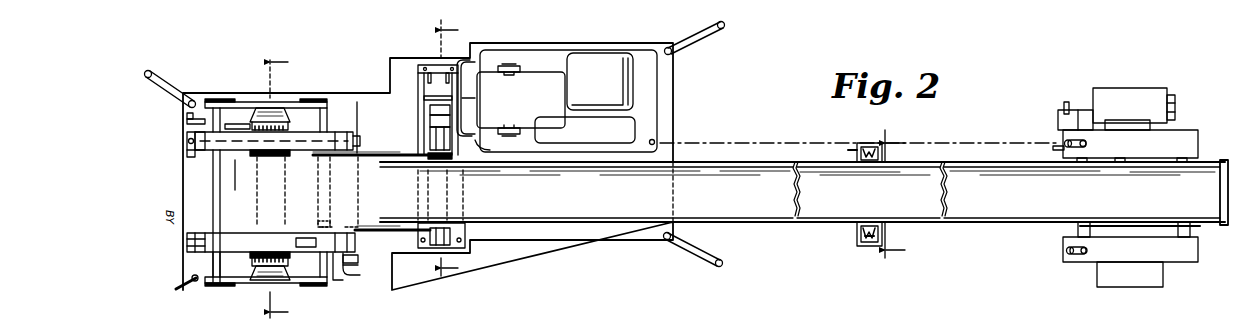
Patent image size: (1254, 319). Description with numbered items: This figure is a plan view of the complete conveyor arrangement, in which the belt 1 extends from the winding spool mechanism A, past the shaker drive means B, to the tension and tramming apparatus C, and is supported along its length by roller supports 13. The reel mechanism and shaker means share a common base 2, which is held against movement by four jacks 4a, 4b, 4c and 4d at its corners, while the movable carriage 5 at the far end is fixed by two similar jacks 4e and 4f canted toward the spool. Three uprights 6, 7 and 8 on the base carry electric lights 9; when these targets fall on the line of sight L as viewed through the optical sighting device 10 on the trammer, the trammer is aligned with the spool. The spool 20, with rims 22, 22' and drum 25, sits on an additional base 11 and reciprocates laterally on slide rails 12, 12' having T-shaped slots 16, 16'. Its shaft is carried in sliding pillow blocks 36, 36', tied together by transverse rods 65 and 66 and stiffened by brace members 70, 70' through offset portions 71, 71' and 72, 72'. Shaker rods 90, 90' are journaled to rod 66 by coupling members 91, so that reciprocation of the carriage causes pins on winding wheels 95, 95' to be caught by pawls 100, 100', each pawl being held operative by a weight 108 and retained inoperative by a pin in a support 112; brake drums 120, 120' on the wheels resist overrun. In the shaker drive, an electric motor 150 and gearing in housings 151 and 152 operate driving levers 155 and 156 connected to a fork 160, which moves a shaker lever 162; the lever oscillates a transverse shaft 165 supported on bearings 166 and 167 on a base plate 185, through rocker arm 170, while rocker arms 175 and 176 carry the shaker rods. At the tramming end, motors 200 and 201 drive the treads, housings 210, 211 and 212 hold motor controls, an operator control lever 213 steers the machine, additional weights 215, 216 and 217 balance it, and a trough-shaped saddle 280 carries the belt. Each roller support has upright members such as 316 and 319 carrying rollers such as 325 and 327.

The belt 1 is at (772, 216).
The base 2 is at (372, 92).
The movable carriage 5 is at (1206, 242).
The upright 6 is at (186, 147).
The upright 7 is at (360, 142).
The upright 8 is at (656, 141).
The electric light 9 is at (188, 140).
The optical sighting device 10 is at (1056, 149).
The additional base 11 is at (440, 150).
The slide rail 12 is at (548, 196).
The roller supports 13 is at (856, 230).
The T-shaped slot 16 is at (205, 244).
The winding spool 20 is at (256, 186).
The peripheral rim 22 is at (294, 228).
The drum 25 is at (256, 208).
The sliding pillow block 36 is at (259, 262).
The transverse rod 65 is at (213, 185).
The transverse rod 66 is at (348, 282).
The brace member 70 is at (266, 294).
The offset portion 71 is at (226, 281).
The offset portion 72 is at (325, 284).
The shaker rod 90 is at (392, 239).
The coupling member 91 is at (332, 220).
The winding wheel 95 is at (271, 242).
The pawl 100 is at (308, 244).
The weight 108 is at (358, 259).
The support 112 is at (360, 266).
The brake drum 120 is at (270, 284).
The electric motor 150 is at (600, 81).
The housing 151 is at (585, 130).
The housing 152 is at (521, 100).
The driving lever 155 is at (508, 64).
The driving lever 156 is at (505, 123).
The fork 160 is at (491, 152).
The shaker lever 162 is at (466, 107).
The transverse shaft 165 is at (430, 141).
The bearing 166 is at (452, 250).
The bearing 167 is at (430, 124).
The rocker arm 170 is at (438, 101).
The rocker arm 175 is at (420, 248).
The rocker arm 176 is at (428, 170).
The base plate 185 is at (430, 112).
The electric motor 200 is at (1104, 236).
The electric motor 201 is at (1103, 160).
The housing 210 is at (1163, 93).
The housing 211 is at (1128, 122).
The housing 212 is at (1080, 110).
The operator control lever 213 is at (1064, 105).
The additional weight 215 is at (1192, 262).
The additional weight 216 is at (1197, 132).
The additional weight 217 is at (1138, 286).
The saddle 280 is at (1222, 160).
The upright member 316 is at (866, 246).
The upright member 319 is at (868, 146).
The roller 325 is at (884, 236).
The roller 327 is at (856, 152).
The jack 4a is at (170, 83).
The jack 4b is at (180, 291).
The jack 4c is at (696, 38).
The jack 4d is at (693, 262).
The hydraulic jack 4e is at (1065, 142).
The hydraulic jack 4f is at (1070, 256).
The slide rail 12' is at (176, 161).
The T-shaped slot 16' is at (179, 123).
The peripheral rim 22' is at (271, 191).
The sliding pillow block 36' is at (261, 170).
The brace member 70' is at (266, 95).
The offset portion 71' is at (218, 101).
The offset portion 72' is at (339, 100).
The shaker rod 90' is at (371, 129).
The winding wheel 95' is at (274, 141).
The pawl 100' is at (238, 119).
The brake drum 120' is at (278, 100).
The winding spool mechanism A is at (306, 95).
The shaker drive means B is at (540, 45).
The tension and tramming apparatus C is at (1130, 88).
The line of sight L is at (805, 138).